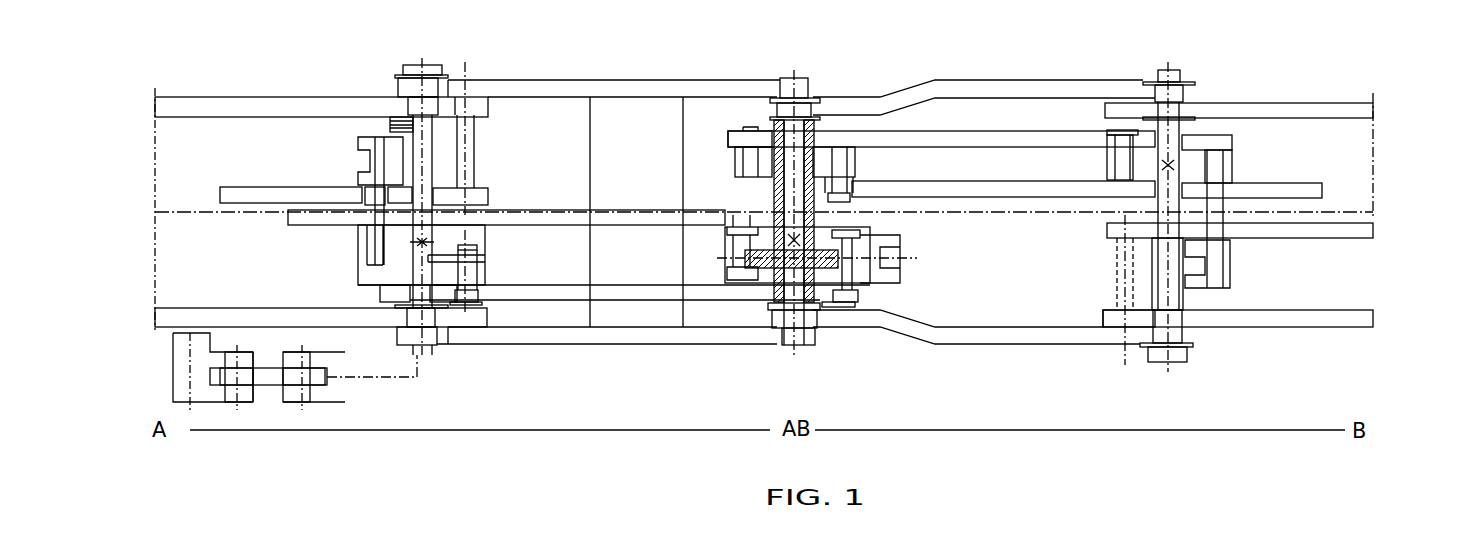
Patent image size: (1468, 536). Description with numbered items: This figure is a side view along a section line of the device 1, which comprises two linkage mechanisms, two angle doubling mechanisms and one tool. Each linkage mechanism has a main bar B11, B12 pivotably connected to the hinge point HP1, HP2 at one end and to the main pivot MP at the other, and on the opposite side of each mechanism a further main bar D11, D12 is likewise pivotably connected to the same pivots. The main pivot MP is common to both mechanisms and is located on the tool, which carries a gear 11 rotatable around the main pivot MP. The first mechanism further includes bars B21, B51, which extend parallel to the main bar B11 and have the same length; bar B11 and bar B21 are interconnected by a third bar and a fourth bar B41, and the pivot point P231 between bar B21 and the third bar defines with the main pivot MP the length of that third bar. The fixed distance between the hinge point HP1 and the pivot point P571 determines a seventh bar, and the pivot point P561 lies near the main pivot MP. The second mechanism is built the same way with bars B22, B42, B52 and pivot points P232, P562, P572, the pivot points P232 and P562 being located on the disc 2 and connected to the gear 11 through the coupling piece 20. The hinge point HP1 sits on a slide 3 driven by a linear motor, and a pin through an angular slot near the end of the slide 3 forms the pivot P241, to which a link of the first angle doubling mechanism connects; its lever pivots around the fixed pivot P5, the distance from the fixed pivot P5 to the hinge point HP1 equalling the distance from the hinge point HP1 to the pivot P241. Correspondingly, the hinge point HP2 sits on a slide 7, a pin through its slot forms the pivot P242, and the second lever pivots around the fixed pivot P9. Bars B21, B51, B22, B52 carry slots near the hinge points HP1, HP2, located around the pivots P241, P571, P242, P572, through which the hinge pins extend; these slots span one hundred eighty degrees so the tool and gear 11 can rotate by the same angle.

The device 1 is at (1381, 198).
The disc 2 is at (823, 157).
The slide 3 is at (216, 107).
The slide 7 is at (1295, 105).
The gear 11 is at (810, 272).
The coupling piece 20 is at (808, 218).
The main bar D11 is at (625, 90).
The main bar D12 is at (967, 88).
The main bar B11 is at (630, 334).
The main bar B12 is at (1025, 333).
The bar B21 is at (524, 212).
The bar B22 is at (992, 186).
The fourth bar B41 is at (400, 143).
The bar B42 is at (1193, 282).
The bar B51 is at (568, 293).
The bar B52 is at (997, 142).
The fixed pivot P5 is at (466, 157).
The fixed pivot P9 is at (1120, 277).
The pivot point P231 is at (740, 215).
The pivot point P232 is at (848, 162).
The pivot P241 is at (368, 162).
The pivot P242 is at (1222, 163).
The pivot point P561 is at (845, 295).
The pivot point P562 is at (745, 158).
The pivot point P571 is at (470, 272).
The pivot point P572 is at (1120, 165).
The hinge point HP1 is at (425, 348).
The hinge point HP2 is at (1172, 352).
The main pivot MP is at (792, 350).